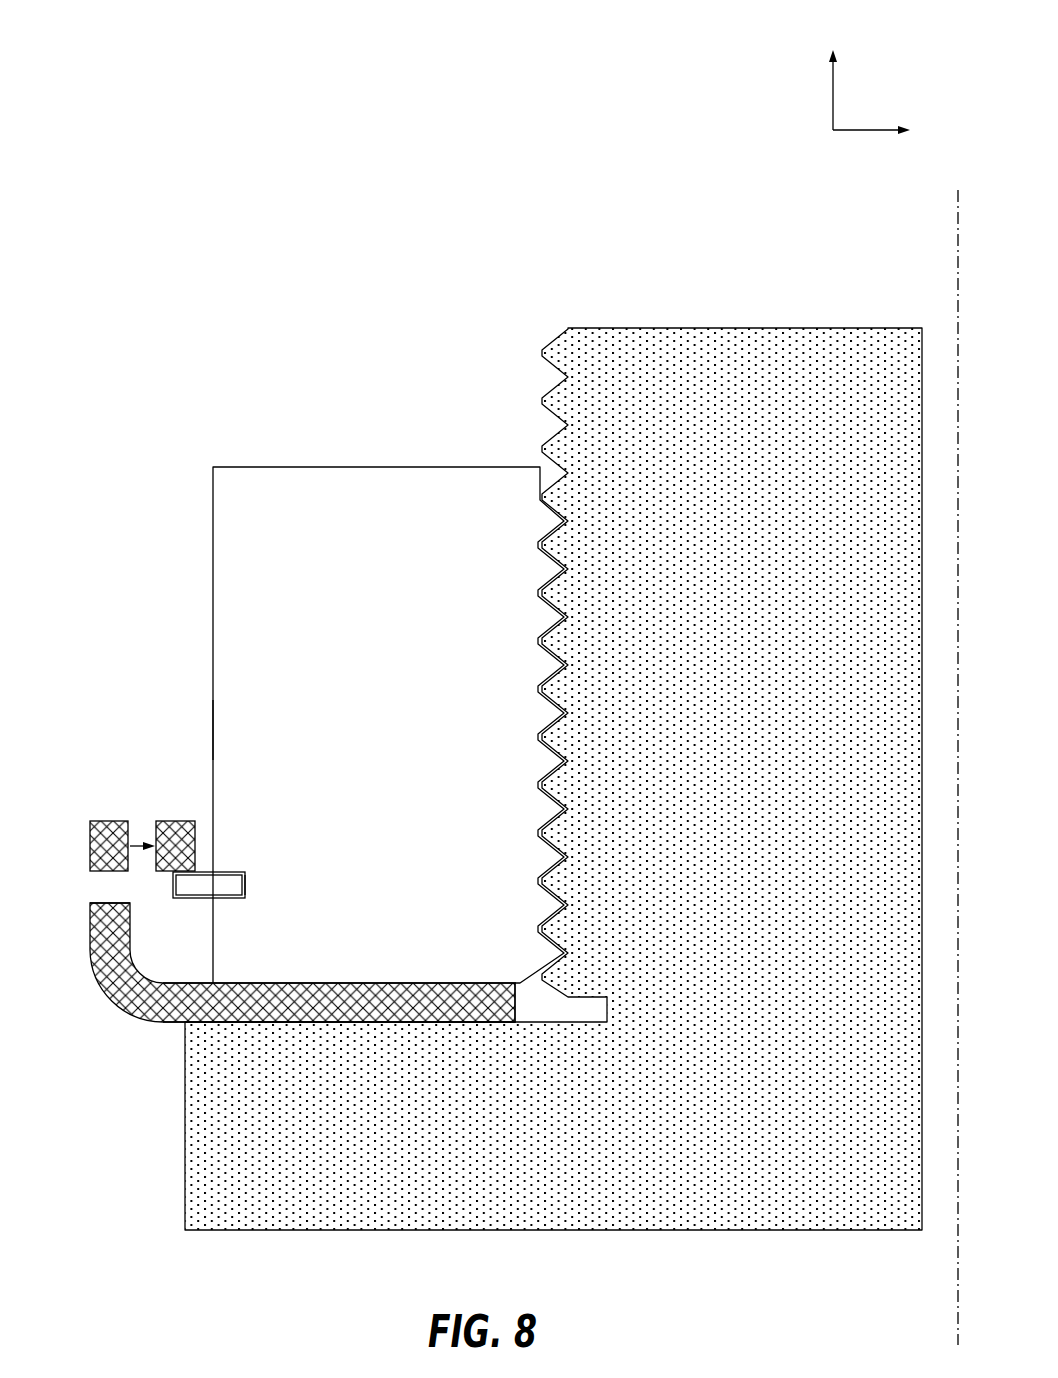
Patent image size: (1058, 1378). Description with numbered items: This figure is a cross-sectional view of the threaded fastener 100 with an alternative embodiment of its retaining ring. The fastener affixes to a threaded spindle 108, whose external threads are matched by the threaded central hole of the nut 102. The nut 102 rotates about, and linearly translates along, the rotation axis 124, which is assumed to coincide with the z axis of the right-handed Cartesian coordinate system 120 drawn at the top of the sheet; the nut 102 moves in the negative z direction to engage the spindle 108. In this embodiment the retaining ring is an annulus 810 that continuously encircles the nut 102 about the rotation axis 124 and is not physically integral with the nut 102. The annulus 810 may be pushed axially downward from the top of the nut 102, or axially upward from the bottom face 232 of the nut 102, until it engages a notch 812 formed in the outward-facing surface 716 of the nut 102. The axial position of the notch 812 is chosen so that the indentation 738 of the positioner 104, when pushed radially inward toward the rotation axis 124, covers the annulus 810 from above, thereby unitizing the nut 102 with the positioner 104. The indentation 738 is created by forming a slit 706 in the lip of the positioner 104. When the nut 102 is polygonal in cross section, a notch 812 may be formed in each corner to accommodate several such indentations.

The threaded fastener 100 is at (153, 70).
The right-handed Cartesian coordinate system 120 is at (902, 46).
The rotation axis 124 is at (958, 290).
The threaded spindle 108 is at (724, 327).
The nut 102 is at (212, 548).
The outward-facing surface 716 is at (200, 730).
The positioner 104 is at (130, 1005).
The bottom face 232 is at (365, 972).
The indentation 738 is at (102, 820).
The slit 706 is at (97, 887).
The annulus 810 is at (209, 885).
The notch 812 is at (262, 886).